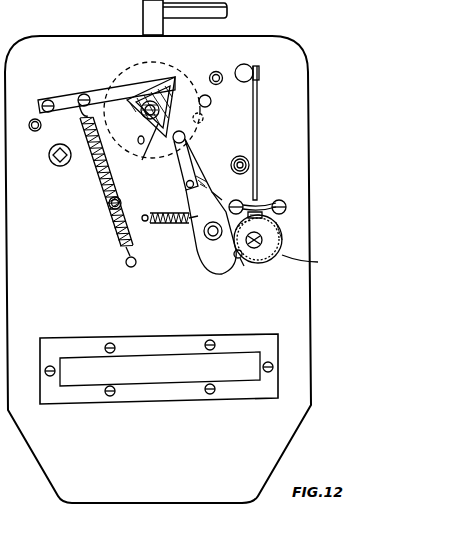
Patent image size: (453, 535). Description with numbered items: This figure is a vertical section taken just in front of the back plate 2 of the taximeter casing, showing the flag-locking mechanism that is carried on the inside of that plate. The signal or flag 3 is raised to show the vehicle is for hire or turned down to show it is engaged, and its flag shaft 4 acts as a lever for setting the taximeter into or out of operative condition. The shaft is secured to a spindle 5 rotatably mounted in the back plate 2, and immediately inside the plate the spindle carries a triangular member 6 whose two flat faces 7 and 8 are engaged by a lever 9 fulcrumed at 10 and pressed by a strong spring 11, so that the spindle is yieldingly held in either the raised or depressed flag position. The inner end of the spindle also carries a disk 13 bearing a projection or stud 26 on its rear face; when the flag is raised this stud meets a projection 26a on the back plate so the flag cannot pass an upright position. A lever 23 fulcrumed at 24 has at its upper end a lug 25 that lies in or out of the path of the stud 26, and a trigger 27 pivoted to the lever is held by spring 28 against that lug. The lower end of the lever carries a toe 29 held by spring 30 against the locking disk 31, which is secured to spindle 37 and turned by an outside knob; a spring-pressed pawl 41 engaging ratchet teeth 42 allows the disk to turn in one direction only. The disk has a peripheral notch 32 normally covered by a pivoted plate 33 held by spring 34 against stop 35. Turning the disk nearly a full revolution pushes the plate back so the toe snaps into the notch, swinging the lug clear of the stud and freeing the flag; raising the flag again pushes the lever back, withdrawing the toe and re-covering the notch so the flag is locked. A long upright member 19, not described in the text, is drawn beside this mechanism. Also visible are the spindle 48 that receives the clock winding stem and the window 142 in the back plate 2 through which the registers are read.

The back plate 2 is at (158, 269).
The signal or flag 3 is at (232, 10).
The flag shaft 4 is at (143, 15).
The spindle 5 is at (126, 180).
The triangular member 6 is at (142, 112).
The flat face 7 is at (126, 123).
The flat face 8 is at (144, 142).
The lever 9 is at (94, 98).
The fulcrum 10 is at (47, 100).
The spring 11 is at (106, 192).
The disk 13 is at (122, 70).
The bar 19 is at (259, 128).
The lever 23 is at (203, 174).
The fulcrum 24 is at (205, 240).
The projection or lug 25 is at (186, 135).
The projection or stud 26 is at (206, 112).
The projection 26a is at (204, 97).
The trigger 27 is at (186, 170).
The spring 28 is at (198, 176).
The toe 29 is at (241, 262).
The spring 30 is at (172, 224).
The locking disk 31 is at (284, 239).
The notch 32 is at (258, 249).
The plate 33 is at (278, 232).
The spring 34 is at (268, 200).
The stop 35 is at (236, 258).
The spindle 37 is at (311, 263).
The spring pressed pawl 41 is at (248, 203).
The ratchet teeth 42 is at (276, 220).
The spindle 48 is at (66, 163).
The window 142 is at (159, 369).